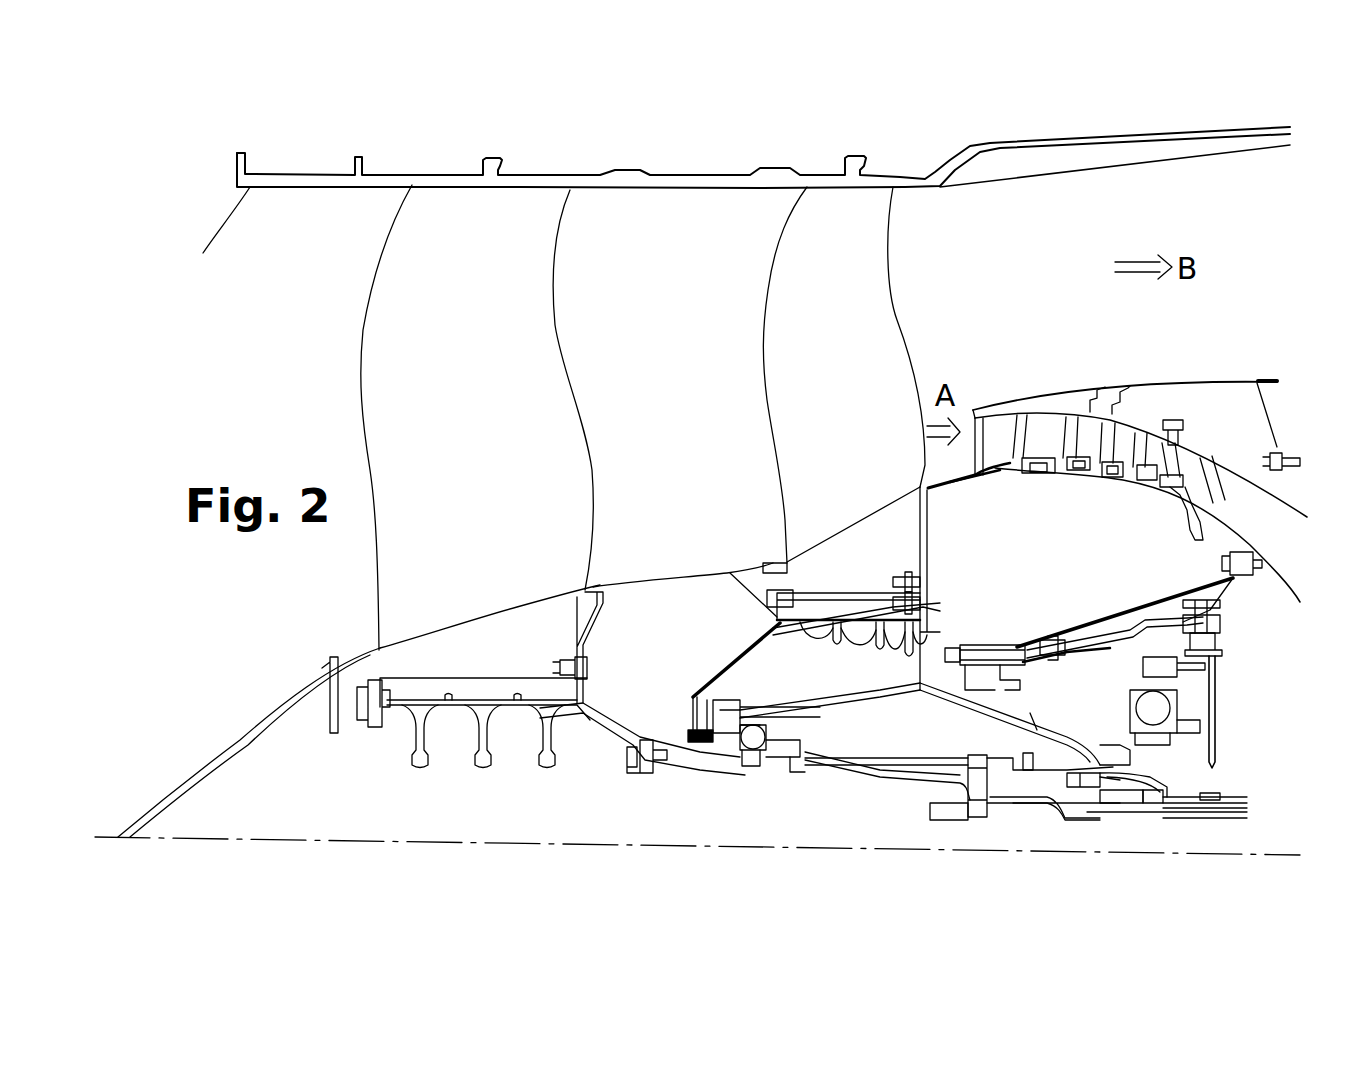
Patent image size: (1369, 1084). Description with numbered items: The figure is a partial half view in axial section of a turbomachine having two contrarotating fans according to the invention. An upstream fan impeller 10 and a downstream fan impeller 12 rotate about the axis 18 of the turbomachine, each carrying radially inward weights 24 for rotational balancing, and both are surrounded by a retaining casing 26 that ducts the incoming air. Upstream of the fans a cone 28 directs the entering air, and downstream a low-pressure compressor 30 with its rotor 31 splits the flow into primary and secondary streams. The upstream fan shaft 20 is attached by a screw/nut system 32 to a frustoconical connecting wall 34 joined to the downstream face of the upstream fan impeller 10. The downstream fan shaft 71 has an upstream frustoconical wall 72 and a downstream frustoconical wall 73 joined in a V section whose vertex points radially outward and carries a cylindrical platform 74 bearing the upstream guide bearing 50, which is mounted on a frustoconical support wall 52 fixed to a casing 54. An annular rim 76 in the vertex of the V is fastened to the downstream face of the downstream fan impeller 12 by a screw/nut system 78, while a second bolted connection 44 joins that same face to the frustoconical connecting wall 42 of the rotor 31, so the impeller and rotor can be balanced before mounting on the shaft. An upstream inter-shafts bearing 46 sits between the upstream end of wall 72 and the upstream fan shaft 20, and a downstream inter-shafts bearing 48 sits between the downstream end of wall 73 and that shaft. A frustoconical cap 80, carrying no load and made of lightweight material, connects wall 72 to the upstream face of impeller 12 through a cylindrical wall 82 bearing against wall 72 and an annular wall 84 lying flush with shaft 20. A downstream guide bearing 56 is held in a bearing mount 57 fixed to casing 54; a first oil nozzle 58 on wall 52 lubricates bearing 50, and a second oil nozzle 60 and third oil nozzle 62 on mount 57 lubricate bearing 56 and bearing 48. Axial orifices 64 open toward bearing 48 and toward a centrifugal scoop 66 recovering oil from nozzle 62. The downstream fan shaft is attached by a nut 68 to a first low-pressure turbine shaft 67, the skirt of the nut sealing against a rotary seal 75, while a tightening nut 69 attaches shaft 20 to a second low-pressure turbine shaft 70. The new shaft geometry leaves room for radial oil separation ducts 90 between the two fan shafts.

The upstream fan impeller 10 is at (550, 430).
The downstream fan impeller 12 is at (883, 301).
The axis 18 is at (554, 845).
The upstream fan shaft 20 is at (872, 788).
The weights 24 is at (421, 768).
The retaining casing 26 is at (690, 180).
The cone 28 is at (203, 765).
The low-pressure compressor 30 is at (1075, 380).
The rotor 31 is at (1083, 468).
The screw/nut system 32 is at (630, 765).
The frustoconical connecting wall 34 is at (600, 705).
The frustoconical connecting wall 42 is at (988, 492).
The screw/nut system 44 is at (940, 578).
The upstream inter-shafts bearing 46 is at (757, 760).
The downstream inter-shafts bearing 48 is at (1058, 812).
The upstream guide bearing 50 is at (998, 645).
The frustoconical support wall 52 is at (1148, 618).
The casing 54 is at (1265, 568).
The downstream guide bearing 56 is at (1153, 700).
The bearing mount 57 is at (1225, 603).
The first oil nozzle 58 is at (1090, 640).
The second oil nozzle 60 is at (1220, 682).
The third oil nozzle 62 is at (1228, 718).
The axial orifices 64 is at (1180, 815).
The centrifugal scoop 66 is at (1185, 775).
The first low-pressure turbine shaft 67 is at (1230, 818).
The nut 68 is at (1160, 812).
The tightening nut 69 is at (953, 818).
The second low-pressure turbine shaft 70 is at (1080, 816).
The downstream fan shaft 71 is at (1068, 717).
The upstream frustoconical wall 72 is at (818, 706).
The downstream frustoconical wall 73 is at (1005, 712).
The cylindrical platform 74 is at (1002, 682).
The rotary seal 75 is at (1127, 802).
The annular rim 76 is at (930, 605).
The screw/nut system 78 is at (930, 590).
The frustoconical cap 80 is at (717, 677).
The cylindrical wall 82 is at (728, 697).
The annular wall 84 is at (692, 720).
The radial oil separation ducts 90 is at (950, 758).